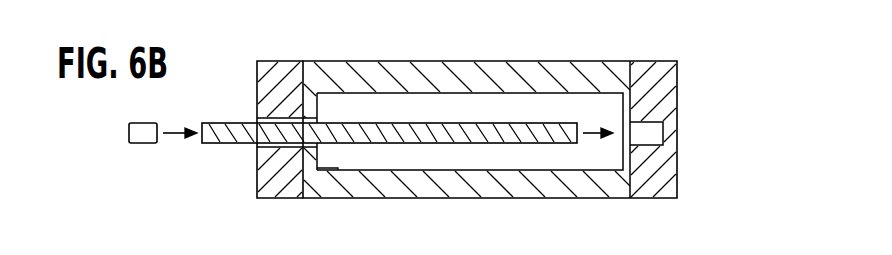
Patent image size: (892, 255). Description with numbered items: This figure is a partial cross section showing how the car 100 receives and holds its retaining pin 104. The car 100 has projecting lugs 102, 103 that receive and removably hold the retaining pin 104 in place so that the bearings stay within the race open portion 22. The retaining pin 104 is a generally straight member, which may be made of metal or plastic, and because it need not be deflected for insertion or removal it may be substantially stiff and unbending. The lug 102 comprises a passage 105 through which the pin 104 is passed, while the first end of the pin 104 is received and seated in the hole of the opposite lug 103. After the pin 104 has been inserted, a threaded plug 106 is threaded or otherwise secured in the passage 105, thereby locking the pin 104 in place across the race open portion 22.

The car 100 is at (526, 70).
The lug 102 is at (258, 115).
The lug 103 is at (678, 132).
The retaining pin 104 is at (342, 146).
The passage 105 is at (256, 167).
The threaded plug 106 is at (147, 143).
The race open portion 22 is at (476, 157).